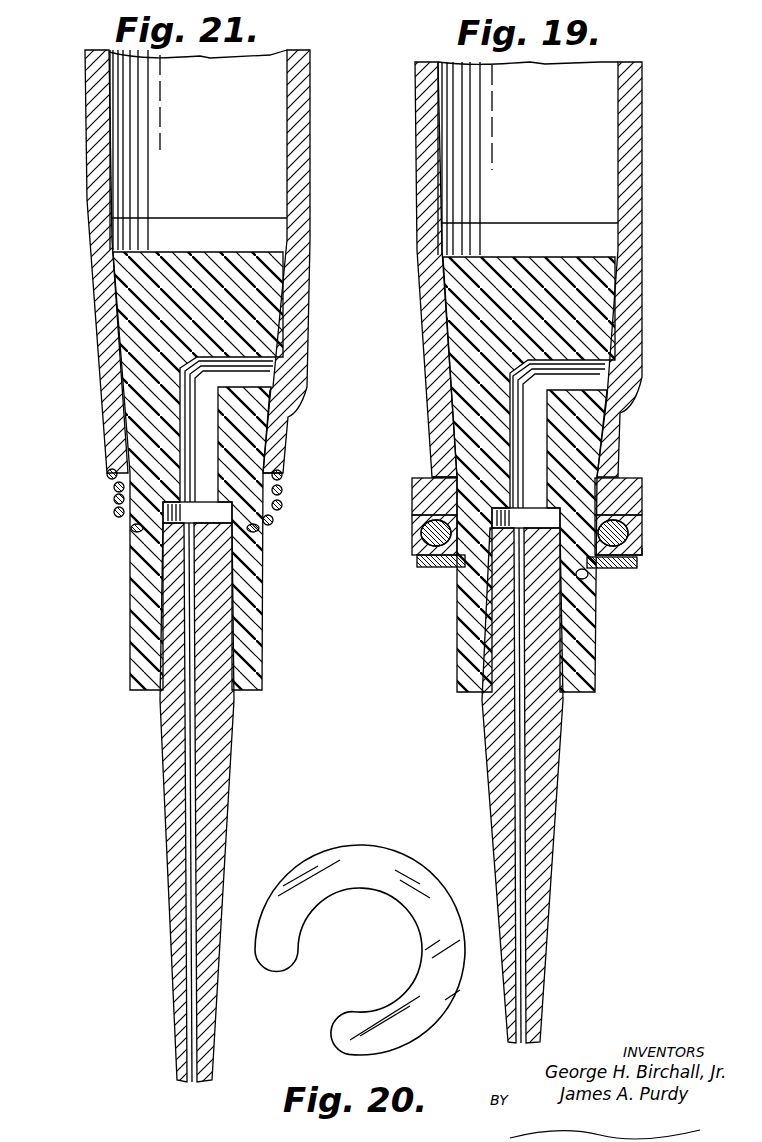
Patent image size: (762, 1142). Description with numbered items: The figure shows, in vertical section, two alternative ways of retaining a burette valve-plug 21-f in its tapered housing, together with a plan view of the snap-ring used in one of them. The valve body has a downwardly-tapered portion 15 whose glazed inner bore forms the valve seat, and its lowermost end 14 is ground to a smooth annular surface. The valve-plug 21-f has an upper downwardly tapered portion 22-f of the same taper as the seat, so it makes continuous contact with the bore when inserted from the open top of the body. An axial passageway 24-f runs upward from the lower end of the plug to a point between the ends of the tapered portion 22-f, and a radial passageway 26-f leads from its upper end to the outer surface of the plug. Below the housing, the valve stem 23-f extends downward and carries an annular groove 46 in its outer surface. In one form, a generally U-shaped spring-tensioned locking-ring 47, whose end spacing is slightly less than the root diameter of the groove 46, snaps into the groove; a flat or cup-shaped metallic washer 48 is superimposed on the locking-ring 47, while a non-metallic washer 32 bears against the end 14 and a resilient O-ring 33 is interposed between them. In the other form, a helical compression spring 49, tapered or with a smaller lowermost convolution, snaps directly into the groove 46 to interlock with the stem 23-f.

In FIG. 21, the lowermost end 14 is at (285, 473).
In FIG. 19, the lowermost end 14 is at (433, 472).
In FIG. 21, the downwardly-tapered portion 15 is at (95, 360).
In FIG. 19, the downwardly-tapered portion 15 is at (430, 390).
In FIG. 21, the valve-plug 21-f is at (128, 283).
In FIG. 19, the valve-plug 21-f is at (572, 288).
In FIG. 21, the tapered portion 22-f is at (277, 340).
In FIG. 19, the tapered portion 22-f is at (610, 340).
In FIG. 21, the valve stem 23-f is at (147, 622).
In FIG. 19, the valve stem 23-f is at (583, 642).
In FIG. 21, the axial passageway 24-f is at (197, 423).
In FIG. 19, the axial passageway 24-f is at (537, 435).
In FIG. 21, the radial passageway 26-f is at (250, 373).
In FIG. 19, the radial passageway 26-f is at (588, 380).
In FIG. 19, the washer 32 is at (625, 493).
In FIG. 19, the O-ring 33 is at (627, 532).
In FIG. 21, the annular groove 46 is at (137, 528).
In FIG. 19, the annular groove 46 is at (578, 577).
In FIG. 19, the locking-ring 47 is at (620, 568).
In FIG. 20, the locking-ring 47 is at (390, 862).
In FIG. 19, the metallic washer 48 is at (640, 553).
In FIG. 21, the helical compression spring 49 is at (113, 497).